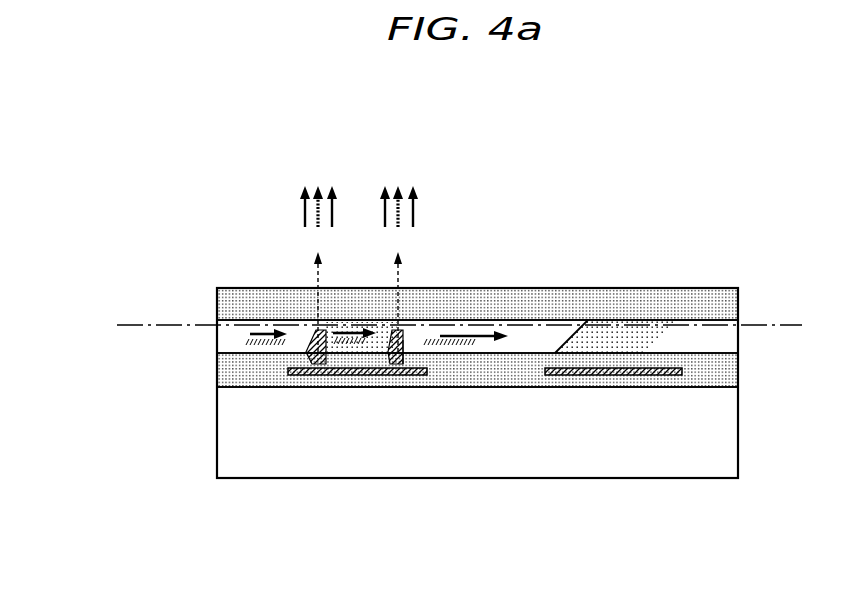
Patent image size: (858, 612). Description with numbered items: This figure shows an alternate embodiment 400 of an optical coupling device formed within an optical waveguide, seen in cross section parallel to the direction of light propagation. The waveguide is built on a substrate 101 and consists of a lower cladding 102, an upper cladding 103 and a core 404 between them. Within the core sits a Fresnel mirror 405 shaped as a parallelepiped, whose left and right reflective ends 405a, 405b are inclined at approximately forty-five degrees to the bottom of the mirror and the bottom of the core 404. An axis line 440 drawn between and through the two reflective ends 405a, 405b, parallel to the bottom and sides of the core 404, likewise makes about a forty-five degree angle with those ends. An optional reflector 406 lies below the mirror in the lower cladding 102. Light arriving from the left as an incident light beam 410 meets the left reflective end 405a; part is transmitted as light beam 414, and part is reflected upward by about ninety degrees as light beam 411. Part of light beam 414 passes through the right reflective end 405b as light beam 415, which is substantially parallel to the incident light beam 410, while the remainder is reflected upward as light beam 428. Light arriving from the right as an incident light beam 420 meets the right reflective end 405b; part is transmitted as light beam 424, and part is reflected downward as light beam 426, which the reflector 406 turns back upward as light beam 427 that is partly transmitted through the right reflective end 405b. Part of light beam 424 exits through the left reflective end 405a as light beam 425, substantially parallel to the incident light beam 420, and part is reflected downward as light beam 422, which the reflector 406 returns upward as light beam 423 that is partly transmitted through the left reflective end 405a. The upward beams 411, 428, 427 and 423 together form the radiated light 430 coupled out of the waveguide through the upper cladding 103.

The microfluidic device 400 is at (448, 80).
The substrate 101 is at (726, 433).
The lower cladding 102 is at (726, 371).
The upper cladding 103 is at (604, 290).
The core 404 is at (726, 340).
The Fresnel mirror 405 is at (644, 353).
The left reflective end 405a is at (311, 334).
The right reflective end 405b is at (403, 329).
The reflector 406 is at (621, 376).
The incident light beam 410 is at (248, 333).
The light beam 411 is at (318, 281).
The light beam 414 is at (354, 336).
The light beam 415 is at (497, 334).
The incident light beam 420 is at (480, 345).
The light beam 422 is at (302, 356).
The light beam 423 is at (318, 350).
The light beam 424 is at (353, 340).
The light beam 425 is at (246, 354).
The light beam 426 is at (404, 336).
The light beam 427 is at (388, 352).
The light beam 428 is at (400, 281).
The radiated light 430 is at (394, 172).
The axis line 440 is at (136, 325).